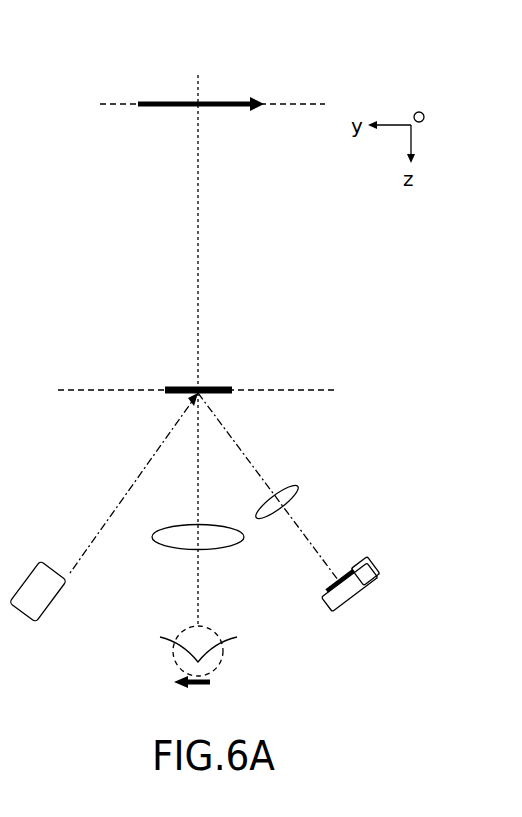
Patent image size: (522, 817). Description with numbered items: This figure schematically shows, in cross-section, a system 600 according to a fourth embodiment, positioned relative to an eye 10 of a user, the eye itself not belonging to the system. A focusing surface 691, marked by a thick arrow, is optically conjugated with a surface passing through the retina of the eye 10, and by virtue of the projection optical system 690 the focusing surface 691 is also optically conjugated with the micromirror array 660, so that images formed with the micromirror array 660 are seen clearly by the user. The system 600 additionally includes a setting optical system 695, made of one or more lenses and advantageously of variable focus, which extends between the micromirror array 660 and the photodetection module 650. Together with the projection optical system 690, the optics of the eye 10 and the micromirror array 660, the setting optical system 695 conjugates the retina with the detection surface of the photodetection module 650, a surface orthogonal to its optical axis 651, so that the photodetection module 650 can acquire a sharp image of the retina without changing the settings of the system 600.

The system 600 is at (301, 65).
The focusing surface 691 is at (278, 103).
The micromirror array 660 is at (223, 389).
The optical axis 651 is at (227, 430).
The projection optical system 690 is at (173, 537).
The setting optical system 695 is at (295, 488).
The photodetection module 650 is at (347, 592).
The eye 10 is at (223, 656).